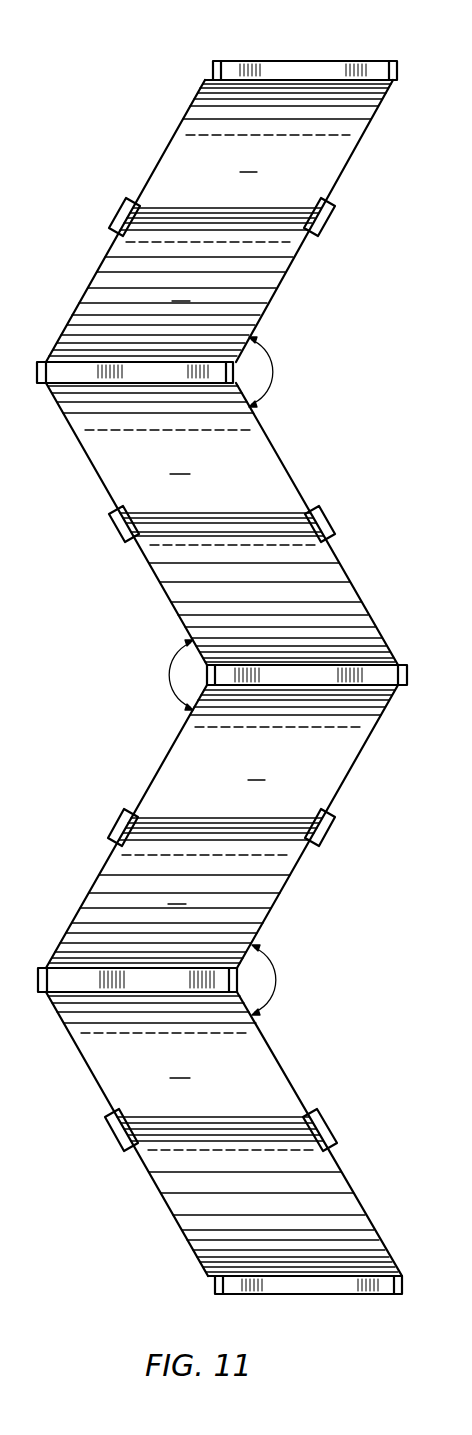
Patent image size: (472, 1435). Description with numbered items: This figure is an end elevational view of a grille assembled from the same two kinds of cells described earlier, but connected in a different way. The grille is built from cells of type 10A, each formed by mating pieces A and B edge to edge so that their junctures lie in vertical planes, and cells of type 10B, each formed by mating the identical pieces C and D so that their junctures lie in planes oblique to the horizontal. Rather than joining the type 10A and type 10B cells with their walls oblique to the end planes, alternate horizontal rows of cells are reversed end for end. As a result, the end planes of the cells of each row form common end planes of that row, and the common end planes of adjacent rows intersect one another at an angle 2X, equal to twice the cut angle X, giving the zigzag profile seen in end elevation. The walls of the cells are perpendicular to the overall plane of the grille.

The cell 10A is at (308, 485).
The cell 10B is at (362, 168).
The angle 2X is at (221, 676).